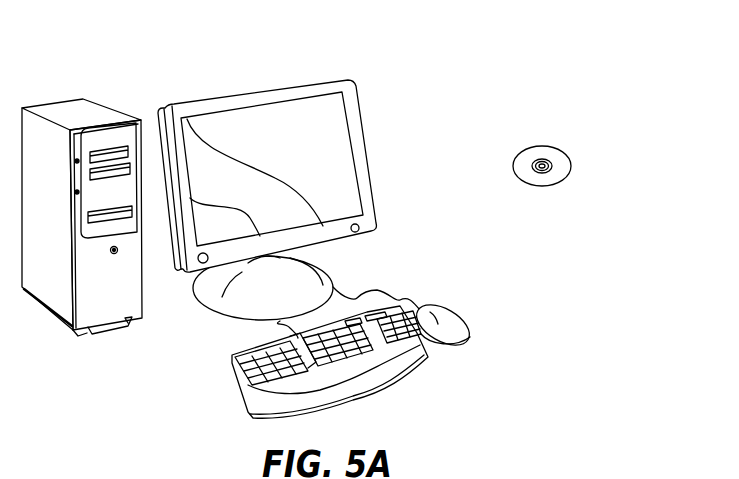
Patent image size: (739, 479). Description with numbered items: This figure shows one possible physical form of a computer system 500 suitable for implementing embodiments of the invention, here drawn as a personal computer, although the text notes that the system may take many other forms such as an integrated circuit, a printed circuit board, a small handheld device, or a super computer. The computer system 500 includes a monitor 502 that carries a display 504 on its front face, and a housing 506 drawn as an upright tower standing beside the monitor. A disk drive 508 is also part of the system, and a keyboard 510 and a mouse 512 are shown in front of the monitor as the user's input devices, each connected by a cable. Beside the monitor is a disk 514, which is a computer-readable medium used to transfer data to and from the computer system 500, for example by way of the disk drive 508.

The computer system 500 is at (478, 65).
The monitor 502 is at (370, 173).
The display 504 is at (328, 120).
The housing 506 is at (70, 110).
The disk drive 508 is at (132, 221).
The keyboard 510 is at (238, 389).
The mouse 512 is at (468, 313).
The disk 514 is at (558, 146).